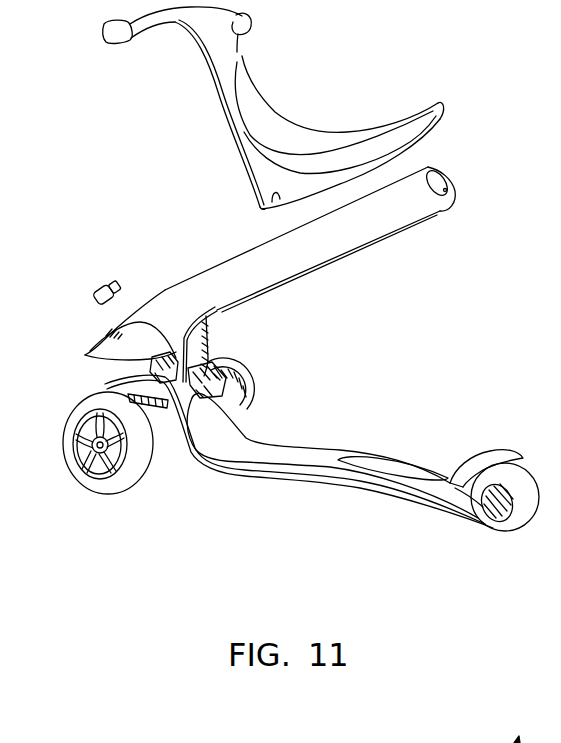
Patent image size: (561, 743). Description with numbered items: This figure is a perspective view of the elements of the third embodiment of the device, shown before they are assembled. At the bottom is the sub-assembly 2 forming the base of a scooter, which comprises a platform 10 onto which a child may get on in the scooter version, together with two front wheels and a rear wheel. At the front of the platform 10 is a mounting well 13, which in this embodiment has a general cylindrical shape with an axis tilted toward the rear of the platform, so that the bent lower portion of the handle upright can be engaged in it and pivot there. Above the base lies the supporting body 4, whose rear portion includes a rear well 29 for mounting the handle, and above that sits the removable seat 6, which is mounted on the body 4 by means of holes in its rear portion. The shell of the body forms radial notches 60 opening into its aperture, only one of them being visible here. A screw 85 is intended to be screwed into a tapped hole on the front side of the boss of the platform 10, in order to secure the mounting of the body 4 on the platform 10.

The sub-assembly 2 is at (403, 518).
The supporting body 4 is at (364, 257).
The removable seat 6 is at (308, 122).
The platform 10 is at (374, 468).
The mounting well 13 is at (175, 358).
The rear well 29 is at (443, 180).
The radial notches 60 is at (160, 360).
The screw 85 is at (99, 284).